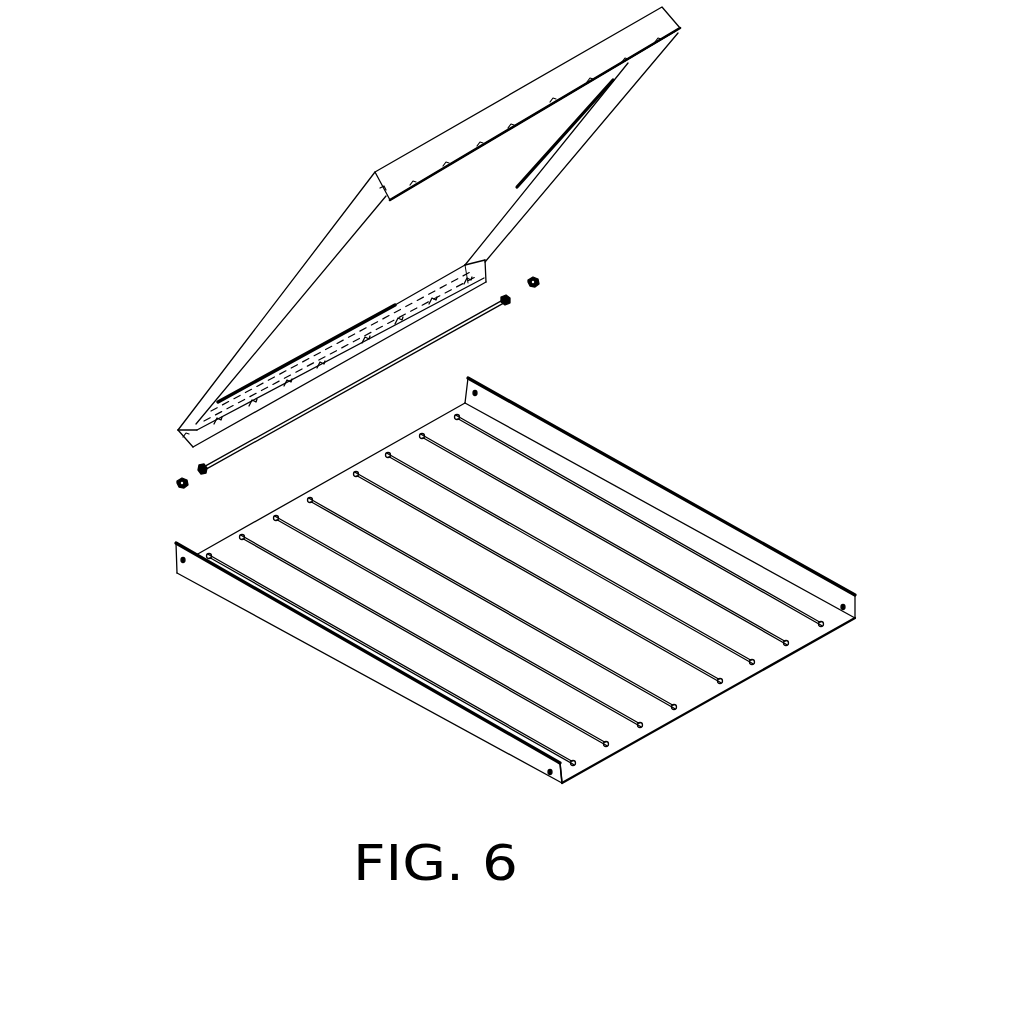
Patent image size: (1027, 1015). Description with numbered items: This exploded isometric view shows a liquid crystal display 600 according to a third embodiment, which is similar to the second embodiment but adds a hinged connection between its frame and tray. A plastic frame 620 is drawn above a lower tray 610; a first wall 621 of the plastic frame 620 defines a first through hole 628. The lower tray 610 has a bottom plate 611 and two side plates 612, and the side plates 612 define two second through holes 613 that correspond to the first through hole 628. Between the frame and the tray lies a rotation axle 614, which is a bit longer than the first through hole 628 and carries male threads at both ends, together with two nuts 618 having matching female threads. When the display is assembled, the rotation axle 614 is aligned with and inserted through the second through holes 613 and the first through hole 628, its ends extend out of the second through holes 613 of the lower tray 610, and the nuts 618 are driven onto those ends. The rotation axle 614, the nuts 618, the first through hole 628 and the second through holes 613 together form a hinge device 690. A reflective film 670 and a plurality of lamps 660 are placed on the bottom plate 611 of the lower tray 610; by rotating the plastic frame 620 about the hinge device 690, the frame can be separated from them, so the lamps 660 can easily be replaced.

The liquid crystal display 600 is at (309, 82).
The lower tray 610 is at (591, 834).
The bottom plate 611 is at (573, 783).
The side plates 612 is at (472, 727).
The second through holes 613 is at (186, 562).
The rotation axle 614 is at (227, 462).
The nuts 618 is at (175, 490).
The plastic frame 620 is at (307, 222).
The first wall 621 is at (483, 275).
The first through hole 628 is at (173, 437).
The lamps 660 is at (535, 463).
The reflective film 670 is at (590, 515).
The hinge device 690 is at (90, 430).